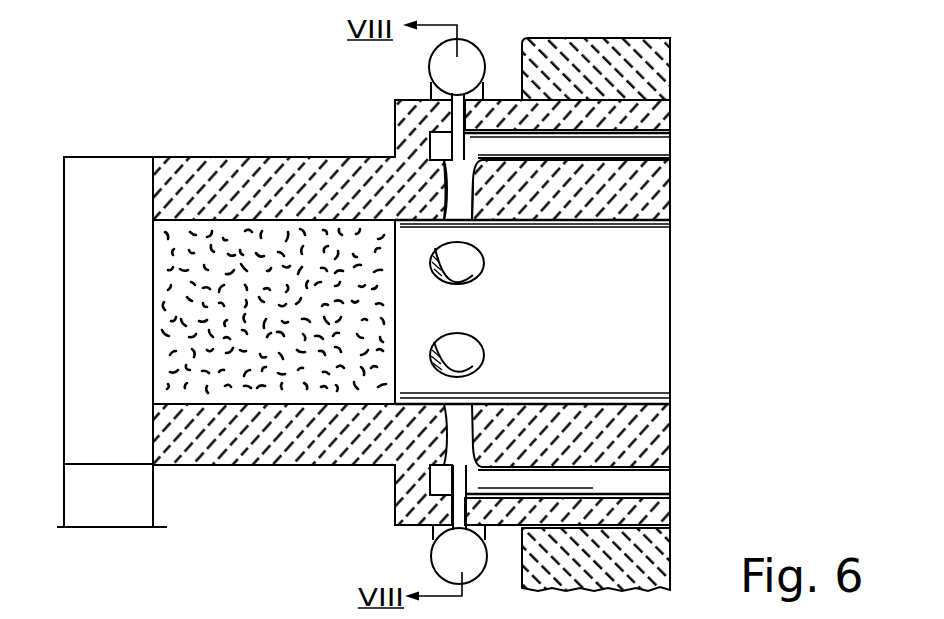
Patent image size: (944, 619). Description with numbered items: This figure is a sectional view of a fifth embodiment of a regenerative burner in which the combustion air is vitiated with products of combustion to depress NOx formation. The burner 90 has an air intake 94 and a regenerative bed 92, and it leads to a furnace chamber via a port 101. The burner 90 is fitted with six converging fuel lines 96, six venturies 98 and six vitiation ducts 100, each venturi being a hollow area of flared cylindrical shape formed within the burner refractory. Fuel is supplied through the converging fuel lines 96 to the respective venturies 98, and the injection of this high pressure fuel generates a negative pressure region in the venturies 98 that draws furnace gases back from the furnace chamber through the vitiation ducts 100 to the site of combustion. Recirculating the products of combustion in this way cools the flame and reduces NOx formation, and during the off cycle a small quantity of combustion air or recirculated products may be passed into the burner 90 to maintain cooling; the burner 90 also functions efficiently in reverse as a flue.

The burner 90 is at (243, 140).
The regenerative bed 92 is at (237, 392).
The air intake 94 is at (92, 422).
The converging fuel lines 96 is at (437, 150).
The venturies 98 is at (470, 222).
The vitiation ducts 100 is at (657, 145).
The port 101 is at (648, 372).